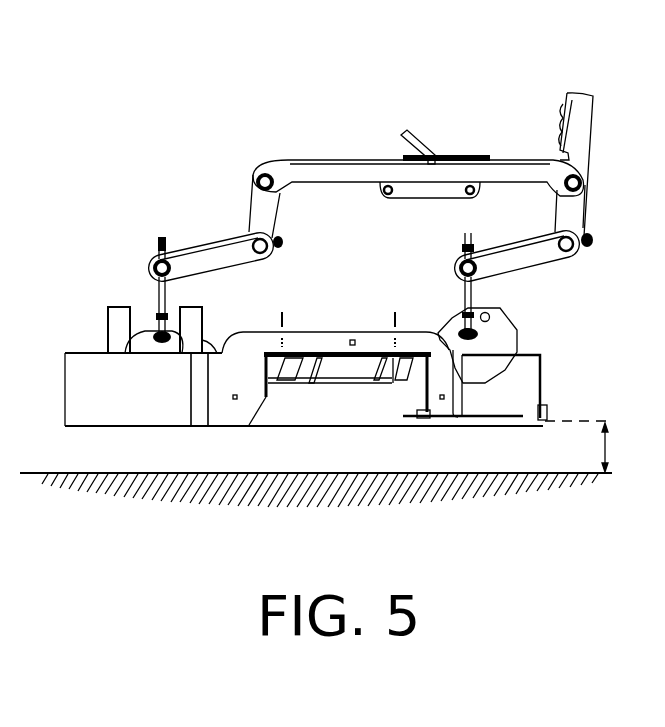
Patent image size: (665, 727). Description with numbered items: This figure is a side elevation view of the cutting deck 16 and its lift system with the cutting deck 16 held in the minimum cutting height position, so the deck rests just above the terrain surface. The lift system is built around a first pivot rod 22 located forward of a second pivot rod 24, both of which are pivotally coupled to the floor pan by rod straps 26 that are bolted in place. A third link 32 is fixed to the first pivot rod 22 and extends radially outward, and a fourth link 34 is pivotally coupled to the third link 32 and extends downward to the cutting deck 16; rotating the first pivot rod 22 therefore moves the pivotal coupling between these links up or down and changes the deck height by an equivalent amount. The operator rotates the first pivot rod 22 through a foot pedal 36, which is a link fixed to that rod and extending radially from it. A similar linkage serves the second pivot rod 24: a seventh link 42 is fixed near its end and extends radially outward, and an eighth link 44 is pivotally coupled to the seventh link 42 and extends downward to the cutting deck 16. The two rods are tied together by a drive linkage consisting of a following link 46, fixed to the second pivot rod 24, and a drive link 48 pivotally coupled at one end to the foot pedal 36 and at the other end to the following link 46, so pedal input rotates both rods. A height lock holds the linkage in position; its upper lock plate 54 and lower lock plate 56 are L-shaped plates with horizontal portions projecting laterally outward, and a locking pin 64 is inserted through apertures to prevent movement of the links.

The cutting deck 16 is at (95, 392).
The first pivot rod 22 is at (558, 220).
The second pivot rod 24 is at (266, 258).
The rod straps 26 is at (287, 242).
The third link 32 is at (527, 258).
The fourth link 34 is at (463, 284).
The foot pedal 36 is at (587, 110).
The seventh link 42 is at (202, 258).
The eighth link 44 is at (154, 286).
The following link 46 is at (255, 207).
The drive link 48 is at (318, 174).
The upper lock plate 54 is at (460, 154).
The lower lock plate 56 is at (447, 194).
The locking pin 64 is at (417, 137).